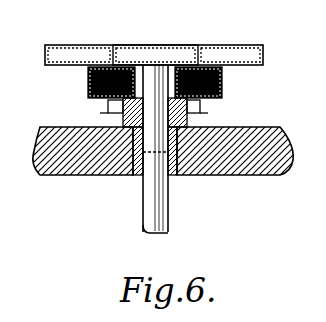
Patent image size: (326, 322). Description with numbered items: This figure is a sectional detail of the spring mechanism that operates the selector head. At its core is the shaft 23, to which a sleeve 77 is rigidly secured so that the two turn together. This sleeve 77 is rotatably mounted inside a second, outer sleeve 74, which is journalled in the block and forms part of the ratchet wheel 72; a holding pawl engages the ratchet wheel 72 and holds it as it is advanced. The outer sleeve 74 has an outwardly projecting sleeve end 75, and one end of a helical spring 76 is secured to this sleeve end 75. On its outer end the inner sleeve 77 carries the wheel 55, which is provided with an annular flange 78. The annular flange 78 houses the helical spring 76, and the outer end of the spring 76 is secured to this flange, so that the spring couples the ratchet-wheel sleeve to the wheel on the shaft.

The shaft 23 is at (168, 218).
The wheel 55 is at (192, 52).
The ratchet wheel 72 is at (108, 107).
The sleeve 74 is at (172, 178).
The sleeve end 75 is at (139, 66).
The helical spring 76 is at (207, 97).
The sleeve 77 is at (137, 176).
The annular flange 78 is at (222, 85).